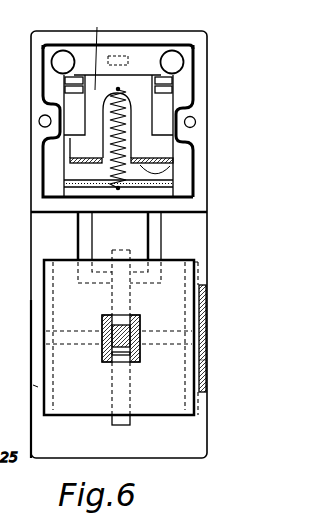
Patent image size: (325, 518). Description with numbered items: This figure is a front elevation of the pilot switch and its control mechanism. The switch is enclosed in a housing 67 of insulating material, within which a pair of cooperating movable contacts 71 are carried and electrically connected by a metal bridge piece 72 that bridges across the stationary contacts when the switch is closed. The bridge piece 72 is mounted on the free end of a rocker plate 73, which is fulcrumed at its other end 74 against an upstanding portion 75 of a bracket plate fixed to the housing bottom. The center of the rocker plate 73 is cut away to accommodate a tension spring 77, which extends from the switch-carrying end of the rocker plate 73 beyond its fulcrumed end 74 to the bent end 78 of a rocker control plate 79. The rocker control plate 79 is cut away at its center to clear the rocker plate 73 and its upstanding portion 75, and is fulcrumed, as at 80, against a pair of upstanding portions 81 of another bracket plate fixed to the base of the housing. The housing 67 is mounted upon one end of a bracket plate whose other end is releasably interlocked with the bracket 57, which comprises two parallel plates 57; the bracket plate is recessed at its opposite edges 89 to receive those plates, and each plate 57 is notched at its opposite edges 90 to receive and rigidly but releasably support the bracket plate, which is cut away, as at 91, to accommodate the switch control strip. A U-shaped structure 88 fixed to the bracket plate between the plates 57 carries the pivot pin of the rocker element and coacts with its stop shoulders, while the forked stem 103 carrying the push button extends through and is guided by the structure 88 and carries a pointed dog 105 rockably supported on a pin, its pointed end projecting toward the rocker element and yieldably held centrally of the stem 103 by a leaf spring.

The bracket 57 is at (207, 338).
The housing 67 is at (43, 100).
The movable contacts 71 is at (62, 52).
The bridge piece 72 is at (138, 58).
The rocker plate 73 is at (94, 51).
The fulcrumed end 74 is at (75, 177).
The upstanding portion 75 is at (140, 181).
The tension spring 77 is at (129, 143).
The bent end 78 is at (78, 190).
The rocker control plate 79 is at (166, 112).
The fulcrum 80 is at (60, 88).
The upstanding portions 81 is at (58, 67).
The U-shaped structure 88 is at (86, 402).
The recessed edges 89 is at (203, 372).
The notched edges 90 is at (200, 276).
The cut-away 91 is at (157, 228).
The forked stem 103 is at (102, 318).
The pointed dog 105 is at (102, 344).